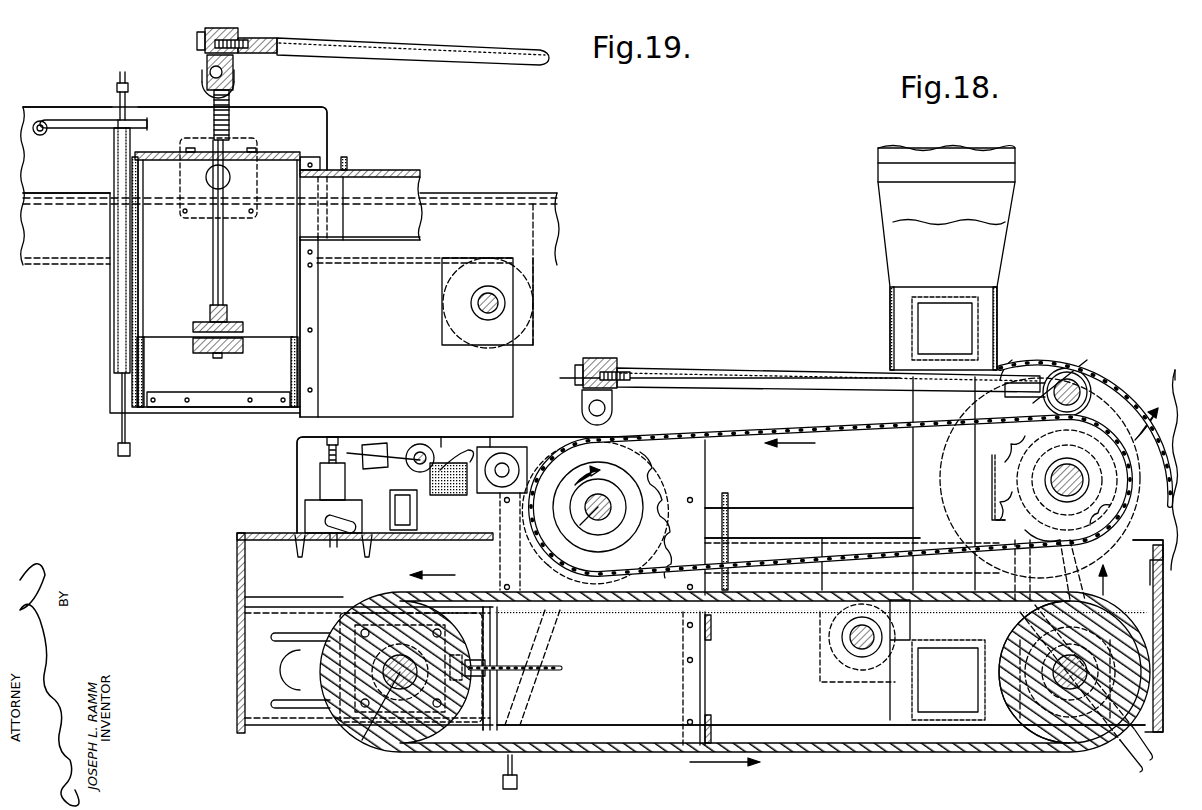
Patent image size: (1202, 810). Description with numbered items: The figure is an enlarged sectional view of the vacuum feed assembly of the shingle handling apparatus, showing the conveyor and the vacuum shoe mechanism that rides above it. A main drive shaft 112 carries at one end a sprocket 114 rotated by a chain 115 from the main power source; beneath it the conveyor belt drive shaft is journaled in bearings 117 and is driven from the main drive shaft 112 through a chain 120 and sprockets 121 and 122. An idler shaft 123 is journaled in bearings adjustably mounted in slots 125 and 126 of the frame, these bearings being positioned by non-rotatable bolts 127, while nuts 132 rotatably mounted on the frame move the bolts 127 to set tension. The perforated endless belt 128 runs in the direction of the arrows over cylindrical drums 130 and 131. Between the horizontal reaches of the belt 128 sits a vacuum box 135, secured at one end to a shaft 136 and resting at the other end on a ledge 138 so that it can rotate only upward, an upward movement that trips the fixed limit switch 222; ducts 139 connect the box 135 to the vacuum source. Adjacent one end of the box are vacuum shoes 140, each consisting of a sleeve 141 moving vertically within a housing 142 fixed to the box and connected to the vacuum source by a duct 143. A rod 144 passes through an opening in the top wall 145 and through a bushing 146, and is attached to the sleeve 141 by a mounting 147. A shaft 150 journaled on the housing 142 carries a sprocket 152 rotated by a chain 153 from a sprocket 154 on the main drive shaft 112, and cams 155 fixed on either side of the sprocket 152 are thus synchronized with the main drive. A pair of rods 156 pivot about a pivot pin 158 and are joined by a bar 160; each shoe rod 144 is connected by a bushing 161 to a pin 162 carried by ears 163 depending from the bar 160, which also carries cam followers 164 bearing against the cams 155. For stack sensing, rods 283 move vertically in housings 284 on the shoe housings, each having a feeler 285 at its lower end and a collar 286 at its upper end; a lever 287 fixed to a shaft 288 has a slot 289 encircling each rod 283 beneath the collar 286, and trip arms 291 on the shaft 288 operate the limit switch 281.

In FIG. 18, the main drive shaft 112 is at (1067, 490).
In FIG. 18, the sprocket 114 is at (1166, 376).
In FIG. 18, the chain 115 is at (1012, 362).
In FIG. 18, the bearings 117 is at (1072, 655).
In FIG. 18, the chain 120 is at (1135, 545).
In FIG. 18, the sprocket 121 is at (1078, 460).
In FIG. 18, the sprocket 122 is at (1045, 575).
In FIG. 18, the idler shaft 123 is at (391, 709).
In FIG. 18, the slot 125 is at (283, 636).
In FIG. 18, the slot 126 is at (285, 710).
In FIG. 18, the bolts 127 is at (538, 662).
In FIG. 18, the endless belt 128 is at (800, 762).
In FIG. 18, the cylindrical drum 130 is at (1148, 652).
In FIG. 18, the cylindrical drum 131 is at (462, 630).
In FIG. 18, the nuts 132 is at (478, 680).
In FIG. 18, the vacuum box 135 is at (606, 735).
In FIG. 18, the shaft 136 is at (862, 650).
In FIG. 18, the ledge 138 is at (302, 548).
In FIG. 18, the ducts 139 is at (886, 247).
In FIG. 19, the vacuum shoes 140 is at (216, 382).
In FIG. 19, the sleeve 141 is at (140, 365).
In FIG. 19, the housing 142 is at (132, 303).
In FIG. 19, the duct 143 is at (380, 170).
In FIG. 18, the duct 143 is at (782, 508).
In FIG. 19, the rod 144 is at (223, 232).
In FIG. 19, the top wall 145 is at (266, 152).
In FIG. 19, the bushing 146 is at (245, 325).
In FIG. 19, the mounting 147 is at (243, 347).
In FIG. 18, the shaft 150 is at (598, 500).
In FIG. 18, the sprocket 152 is at (660, 478).
In FIG. 18, the chain 153 is at (745, 431).
In FIG. 18, the sprocket 154 is at (1118, 375).
In FIG. 19, the cam 155 is at (262, 108).
In FIG. 18, the cam 155 is at (630, 430).
In FIG. 19, the rods 156 is at (373, 41).
In FIG. 18, the rods 156 is at (708, 370).
In FIG. 18, the pivot pin 158 is at (1070, 372).
In FIG. 19, the bar 160 is at (214, 32).
In FIG. 18, the bar 160 is at (593, 358).
In FIG. 19, the bushing 161 is at (204, 92).
In FIG. 19, the pin 162 is at (210, 72).
In FIG. 19, the ears 163 is at (268, 43).
In FIG. 19, the cam followers 164 is at (232, 100).
In FIG. 18, the cam followers 164 is at (612, 418).
In FIG. 18, the limit switch 222 is at (318, 514).
In FIG. 18, the limit switch 281 is at (403, 527).
In FIG. 19, the rods 283 is at (121, 425).
In FIG. 18, the rods 283 is at (517, 780).
In FIG. 19, the housings 284 is at (114, 225).
In FIG. 19, the feeler 285 is at (130, 450).
In FIG. 19, the collar 286 is at (128, 87).
In FIG. 19, the lever 287 is at (72, 122).
In FIG. 19, the shaft 288 is at (40, 135).
In FIG. 18, the shaft 288 is at (450, 480).
In FIG. 19, the slot 289 is at (150, 123).
In FIG. 18, the trip arms 291 is at (415, 472).